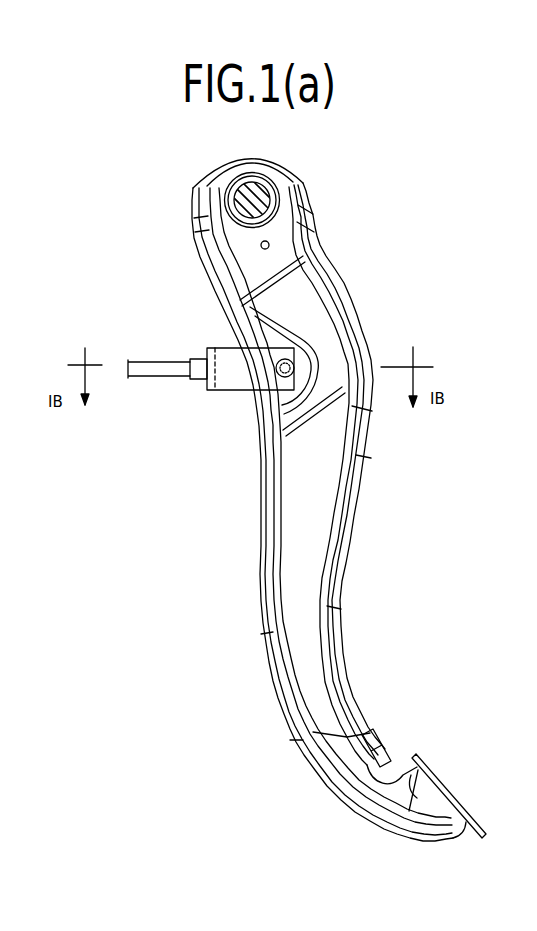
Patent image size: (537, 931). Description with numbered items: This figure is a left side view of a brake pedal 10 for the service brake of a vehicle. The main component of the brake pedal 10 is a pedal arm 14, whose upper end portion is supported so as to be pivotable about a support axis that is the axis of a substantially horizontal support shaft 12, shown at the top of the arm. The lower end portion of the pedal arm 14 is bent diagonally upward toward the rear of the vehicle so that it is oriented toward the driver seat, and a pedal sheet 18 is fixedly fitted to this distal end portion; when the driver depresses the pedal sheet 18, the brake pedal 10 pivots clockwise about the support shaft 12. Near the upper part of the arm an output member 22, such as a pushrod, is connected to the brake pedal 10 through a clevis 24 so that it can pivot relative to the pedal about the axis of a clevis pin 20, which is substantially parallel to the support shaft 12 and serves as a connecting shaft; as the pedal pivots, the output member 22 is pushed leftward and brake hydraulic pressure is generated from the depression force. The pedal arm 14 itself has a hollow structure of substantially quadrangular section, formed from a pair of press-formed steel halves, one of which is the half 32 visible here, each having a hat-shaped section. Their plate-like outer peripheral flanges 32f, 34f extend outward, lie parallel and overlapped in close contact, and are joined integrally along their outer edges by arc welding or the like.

The brake pedal 10 is at (431, 243).
The support shaft 12 is at (268, 183).
The pedal arm 14 is at (231, 757).
The pedal sheet 18 is at (448, 781).
The clevis pin 20 is at (262, 397).
The output member 22 is at (150, 378).
The clevis 24 is at (228, 360).
The half 32 is at (305, 568).
The outer peripheral flange 32f is at (355, 494).
The outer peripheral flange 34f is at (266, 612).